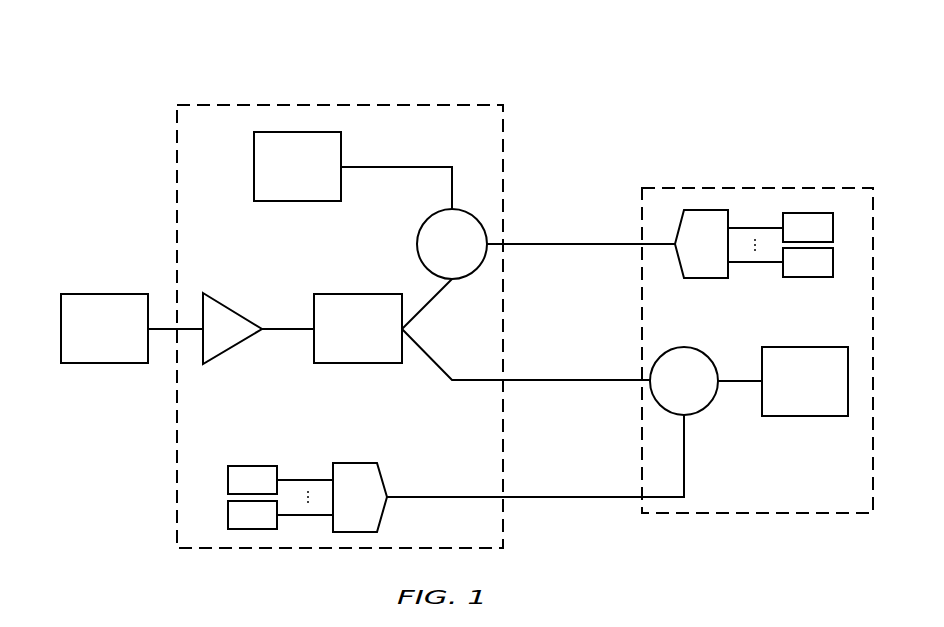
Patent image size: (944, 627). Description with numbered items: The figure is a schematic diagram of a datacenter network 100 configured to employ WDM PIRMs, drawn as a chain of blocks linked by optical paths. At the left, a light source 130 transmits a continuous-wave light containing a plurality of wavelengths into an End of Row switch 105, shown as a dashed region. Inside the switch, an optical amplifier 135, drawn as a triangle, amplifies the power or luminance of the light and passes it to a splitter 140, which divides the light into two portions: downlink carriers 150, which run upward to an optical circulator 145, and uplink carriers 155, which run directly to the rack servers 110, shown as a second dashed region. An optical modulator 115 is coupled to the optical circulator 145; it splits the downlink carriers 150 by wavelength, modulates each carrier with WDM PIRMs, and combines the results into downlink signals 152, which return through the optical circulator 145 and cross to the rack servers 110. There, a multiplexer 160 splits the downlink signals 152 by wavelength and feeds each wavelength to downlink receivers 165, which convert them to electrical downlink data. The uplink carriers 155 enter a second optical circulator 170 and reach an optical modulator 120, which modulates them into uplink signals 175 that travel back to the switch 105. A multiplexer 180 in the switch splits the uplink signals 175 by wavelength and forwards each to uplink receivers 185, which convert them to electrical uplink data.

The datacenter network 100 is at (108, 50).
The End of Row (EOR) switch 105 is at (283, 104).
The rack servers 110 is at (740, 187).
The optical modulator 115 is at (353, 170).
The optical modulator 120 is at (805, 381).
The light source 130 is at (132, 328).
The optical amplifier 135 is at (258, 328).
The splitter 140 is at (358, 328).
The optical circulator (OC) 145 is at (452, 244).
The downlink carriers 150 is at (432, 293).
The downlink signals 152 is at (566, 243).
The uplink carriers 155 is at (567, 379).
The multiplexer (mux) 160 is at (729, 244).
The downlink (DL) receivers (Rxs) 165 is at (793, 245).
The optical circulator (OC) 170 is at (706, 381).
The uplink signals 175 is at (567, 496).
The multiplexer (mux) 180 is at (332, 497).
The uplink (UP) receivers (Rxs) 185 is at (268, 497).